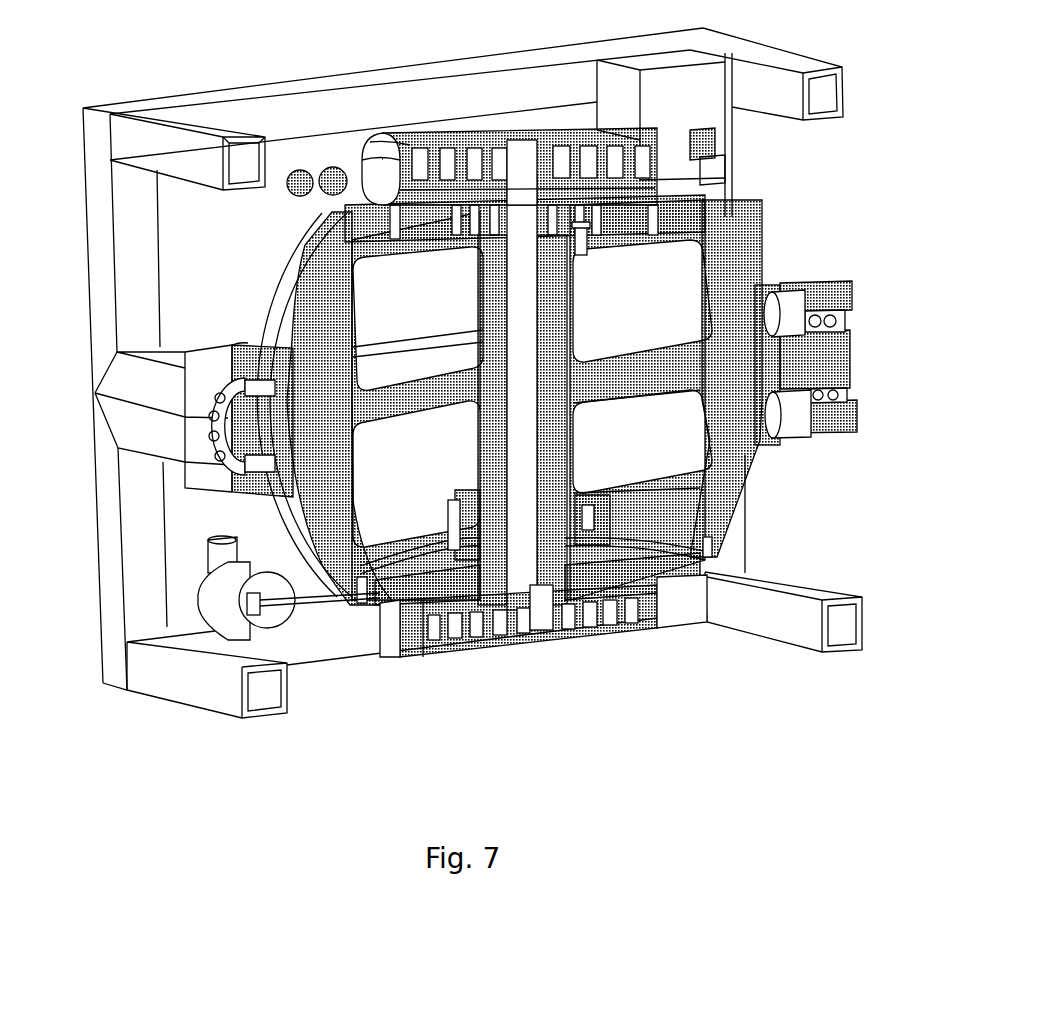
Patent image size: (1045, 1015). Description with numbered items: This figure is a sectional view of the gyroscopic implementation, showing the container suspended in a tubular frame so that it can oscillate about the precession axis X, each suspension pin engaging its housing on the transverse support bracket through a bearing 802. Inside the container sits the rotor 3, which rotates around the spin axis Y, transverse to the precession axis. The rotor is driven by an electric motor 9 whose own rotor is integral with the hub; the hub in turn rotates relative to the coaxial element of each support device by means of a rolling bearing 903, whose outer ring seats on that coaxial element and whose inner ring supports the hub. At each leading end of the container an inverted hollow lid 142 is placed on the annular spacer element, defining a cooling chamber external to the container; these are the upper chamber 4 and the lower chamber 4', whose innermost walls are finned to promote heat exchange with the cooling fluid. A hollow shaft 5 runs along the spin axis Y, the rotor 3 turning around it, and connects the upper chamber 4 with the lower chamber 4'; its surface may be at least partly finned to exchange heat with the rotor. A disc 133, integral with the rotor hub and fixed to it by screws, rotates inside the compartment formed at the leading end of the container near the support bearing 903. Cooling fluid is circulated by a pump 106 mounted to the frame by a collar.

The rotor 3 is at (723, 420).
The upper cooling chamber 4 is at (520, 111).
The lower cooling chamber 4' is at (518, 649).
The hollow shaft 5 is at (530, 345).
The electric motor 9 is at (597, 507).
The pump 106 is at (273, 613).
The disc 133 is at (642, 580).
The lid 142 is at (392, 165).
The bearing 802 is at (232, 432).
The rolling bearing 903 is at (580, 228).